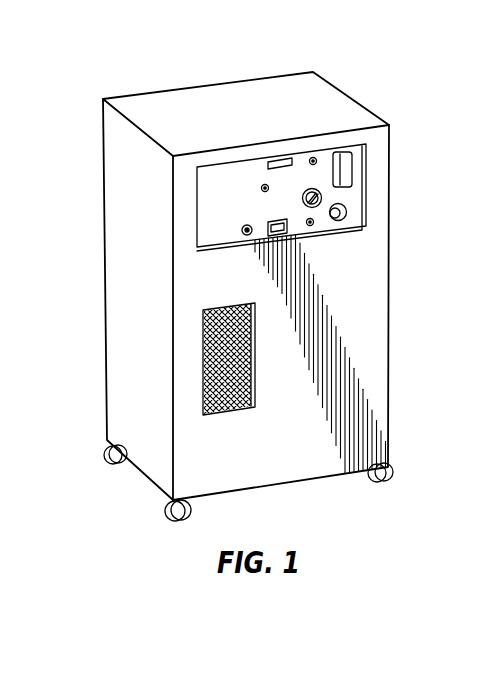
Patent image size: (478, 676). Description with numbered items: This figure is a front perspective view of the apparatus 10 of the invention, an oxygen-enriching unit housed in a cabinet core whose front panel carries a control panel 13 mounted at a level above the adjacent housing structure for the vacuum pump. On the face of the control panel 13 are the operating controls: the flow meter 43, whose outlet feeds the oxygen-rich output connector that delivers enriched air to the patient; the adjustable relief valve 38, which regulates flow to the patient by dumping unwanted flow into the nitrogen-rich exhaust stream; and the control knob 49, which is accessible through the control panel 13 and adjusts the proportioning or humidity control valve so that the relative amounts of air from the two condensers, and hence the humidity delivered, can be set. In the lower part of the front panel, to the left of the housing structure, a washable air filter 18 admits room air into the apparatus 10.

The apparatus 10 is at (402, 211).
The control panel 13 is at (353, 192).
The flow meter 43 is at (340, 152).
The adjustable relief valve 38 is at (338, 221).
The control knob 49 is at (248, 236).
The washable air filter 18 is at (255, 358).